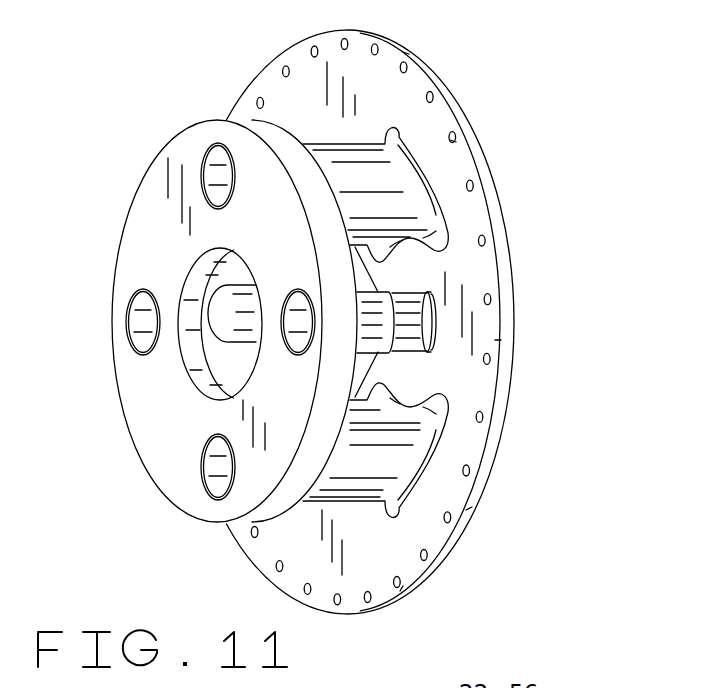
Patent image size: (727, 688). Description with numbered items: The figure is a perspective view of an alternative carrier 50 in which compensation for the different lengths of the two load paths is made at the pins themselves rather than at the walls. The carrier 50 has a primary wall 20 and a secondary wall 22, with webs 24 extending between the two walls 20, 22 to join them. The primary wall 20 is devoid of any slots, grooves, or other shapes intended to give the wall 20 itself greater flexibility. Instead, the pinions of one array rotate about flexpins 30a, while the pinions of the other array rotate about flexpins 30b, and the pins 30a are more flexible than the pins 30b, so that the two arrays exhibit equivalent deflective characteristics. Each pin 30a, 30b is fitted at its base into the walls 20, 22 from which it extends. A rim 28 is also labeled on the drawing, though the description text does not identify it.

The alternative carrier 50 is at (208, 50).
The primary wall 20 is at (364, 87).
The secondary wall 22 is at (160, 211).
The webs 24 is at (393, 185).
The rim 28 is at (450, 537).
The flexpins 30a is at (413, 333).
The flexpins 30b is at (383, 357).